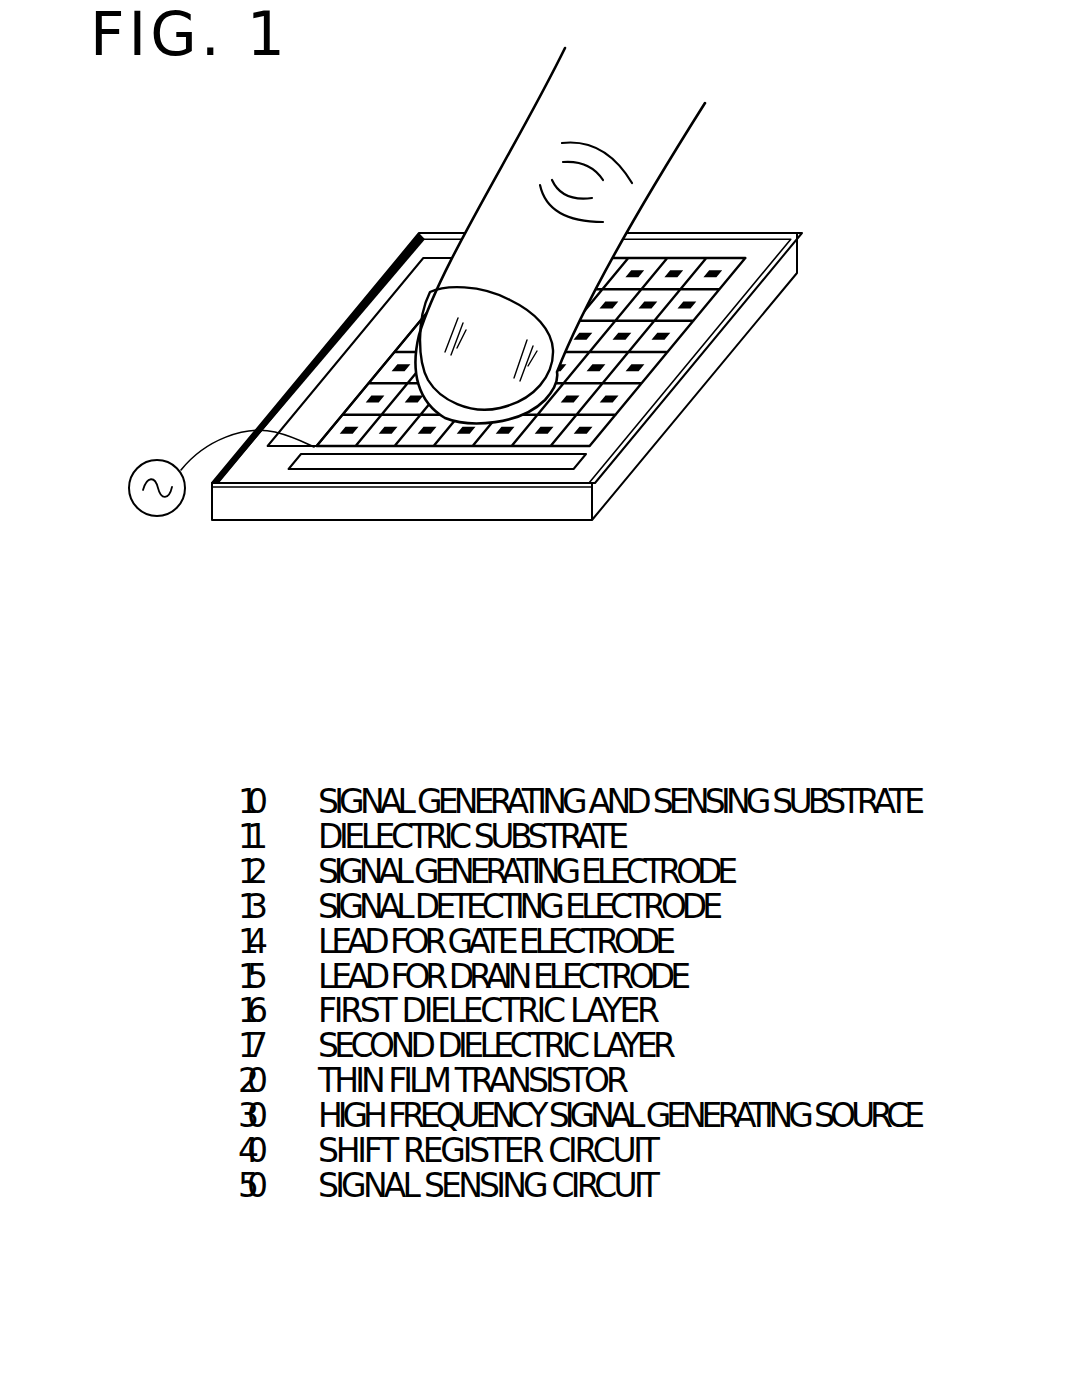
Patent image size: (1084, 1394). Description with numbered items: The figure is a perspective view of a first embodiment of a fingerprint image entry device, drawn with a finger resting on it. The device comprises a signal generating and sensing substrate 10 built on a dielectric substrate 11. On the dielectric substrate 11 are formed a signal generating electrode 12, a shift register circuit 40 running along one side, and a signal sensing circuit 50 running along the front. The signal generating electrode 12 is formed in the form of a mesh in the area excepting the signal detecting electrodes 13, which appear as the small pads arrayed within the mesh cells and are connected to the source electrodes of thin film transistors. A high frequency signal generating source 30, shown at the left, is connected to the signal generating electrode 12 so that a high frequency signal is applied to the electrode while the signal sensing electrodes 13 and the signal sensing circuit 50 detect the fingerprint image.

The signal generating and sensing substrate 10 is at (520, 382).
The dielectric substrate 11 is at (758, 238).
The signal generating electrode 12 is at (630, 410).
The signal sensing electrode 13 is at (588, 431).
The high frequency signal generating source 30 is at (167, 516).
The shift register circuit 40 is at (350, 373).
The signal sensing circuit 50 is at (443, 463).